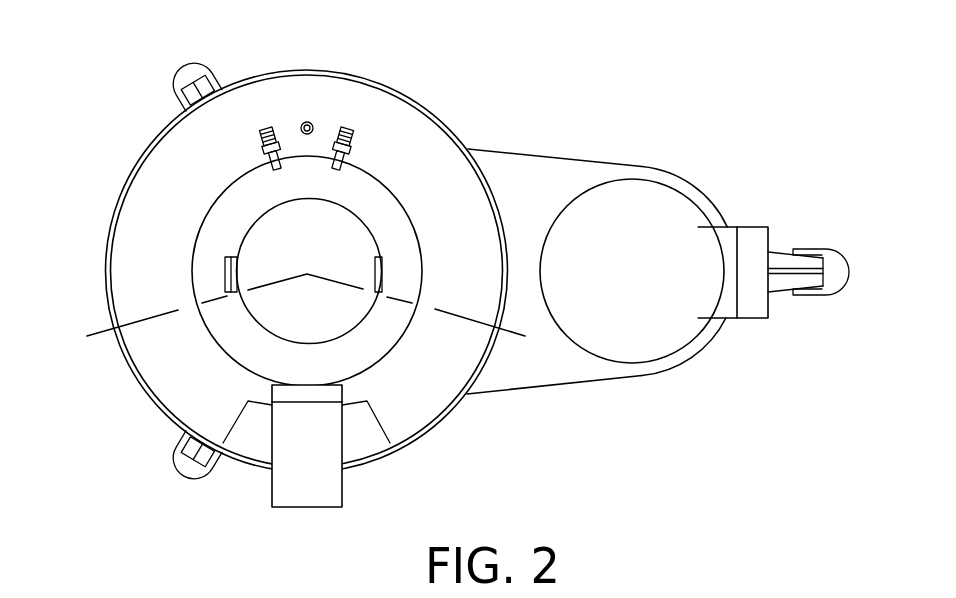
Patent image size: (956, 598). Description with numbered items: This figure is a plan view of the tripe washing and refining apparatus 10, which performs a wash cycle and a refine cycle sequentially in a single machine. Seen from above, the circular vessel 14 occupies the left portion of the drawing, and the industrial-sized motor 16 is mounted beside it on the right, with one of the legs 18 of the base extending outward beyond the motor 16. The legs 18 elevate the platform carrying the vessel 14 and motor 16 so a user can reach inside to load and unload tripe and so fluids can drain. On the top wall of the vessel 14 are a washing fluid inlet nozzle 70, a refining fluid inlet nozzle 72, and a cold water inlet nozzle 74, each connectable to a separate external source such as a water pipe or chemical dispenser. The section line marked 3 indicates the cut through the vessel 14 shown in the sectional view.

The apparatus 10 is at (82, 102).
The vessel 14 is at (477, 118).
The motor 16 is at (652, 210).
The legs 18 is at (823, 255).
The washing fluid inlet nozzle 70 is at (272, 128).
The refining fluid inlet nozzle 72 is at (355, 133).
The cold water inlet nozzle 74 is at (313, 124).
The section line 3- 3 is at (87, 338).